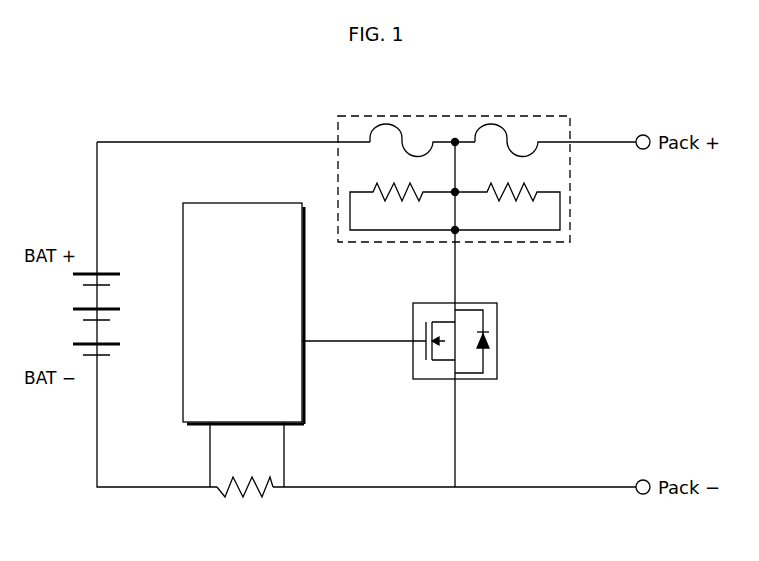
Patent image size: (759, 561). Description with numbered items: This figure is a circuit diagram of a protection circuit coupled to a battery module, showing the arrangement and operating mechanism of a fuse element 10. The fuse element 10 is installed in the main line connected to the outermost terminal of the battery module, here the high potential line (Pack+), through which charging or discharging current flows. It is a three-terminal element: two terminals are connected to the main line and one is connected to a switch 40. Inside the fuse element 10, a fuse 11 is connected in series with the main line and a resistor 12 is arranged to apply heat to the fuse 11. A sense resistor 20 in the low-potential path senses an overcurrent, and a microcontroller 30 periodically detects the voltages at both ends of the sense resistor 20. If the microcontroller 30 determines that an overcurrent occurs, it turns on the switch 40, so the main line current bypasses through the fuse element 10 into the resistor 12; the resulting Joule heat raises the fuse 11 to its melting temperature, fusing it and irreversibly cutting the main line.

The fuse element 10 is at (544, 116).
The fuse 11 is at (386, 124).
The resistor 12 is at (393, 203).
The sense resistor 20 is at (243, 498).
The microcontroller 30 is at (242, 203).
The switch 40 is at (500, 341).